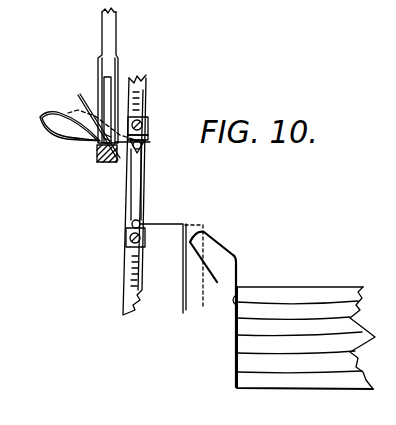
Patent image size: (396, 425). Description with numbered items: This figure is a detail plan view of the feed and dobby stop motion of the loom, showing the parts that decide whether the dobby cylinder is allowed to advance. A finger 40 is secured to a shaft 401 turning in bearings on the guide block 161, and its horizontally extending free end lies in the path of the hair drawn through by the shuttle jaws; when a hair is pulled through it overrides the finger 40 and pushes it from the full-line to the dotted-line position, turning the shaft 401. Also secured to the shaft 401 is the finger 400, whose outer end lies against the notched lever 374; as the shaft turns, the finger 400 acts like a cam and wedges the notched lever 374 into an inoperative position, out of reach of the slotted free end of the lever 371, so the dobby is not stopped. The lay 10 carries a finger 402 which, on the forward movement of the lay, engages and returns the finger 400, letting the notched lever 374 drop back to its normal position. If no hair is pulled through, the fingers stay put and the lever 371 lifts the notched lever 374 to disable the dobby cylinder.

The lay 10 is at (308, 291).
The finger 40 is at (182, 294).
The guide block 161 is at (132, 268).
The lever 371 is at (115, 54).
The notched lever 374 is at (80, 102).
The finger 400 is at (63, 138).
The shaft 401 is at (139, 196).
The finger 402 is at (230, 250).